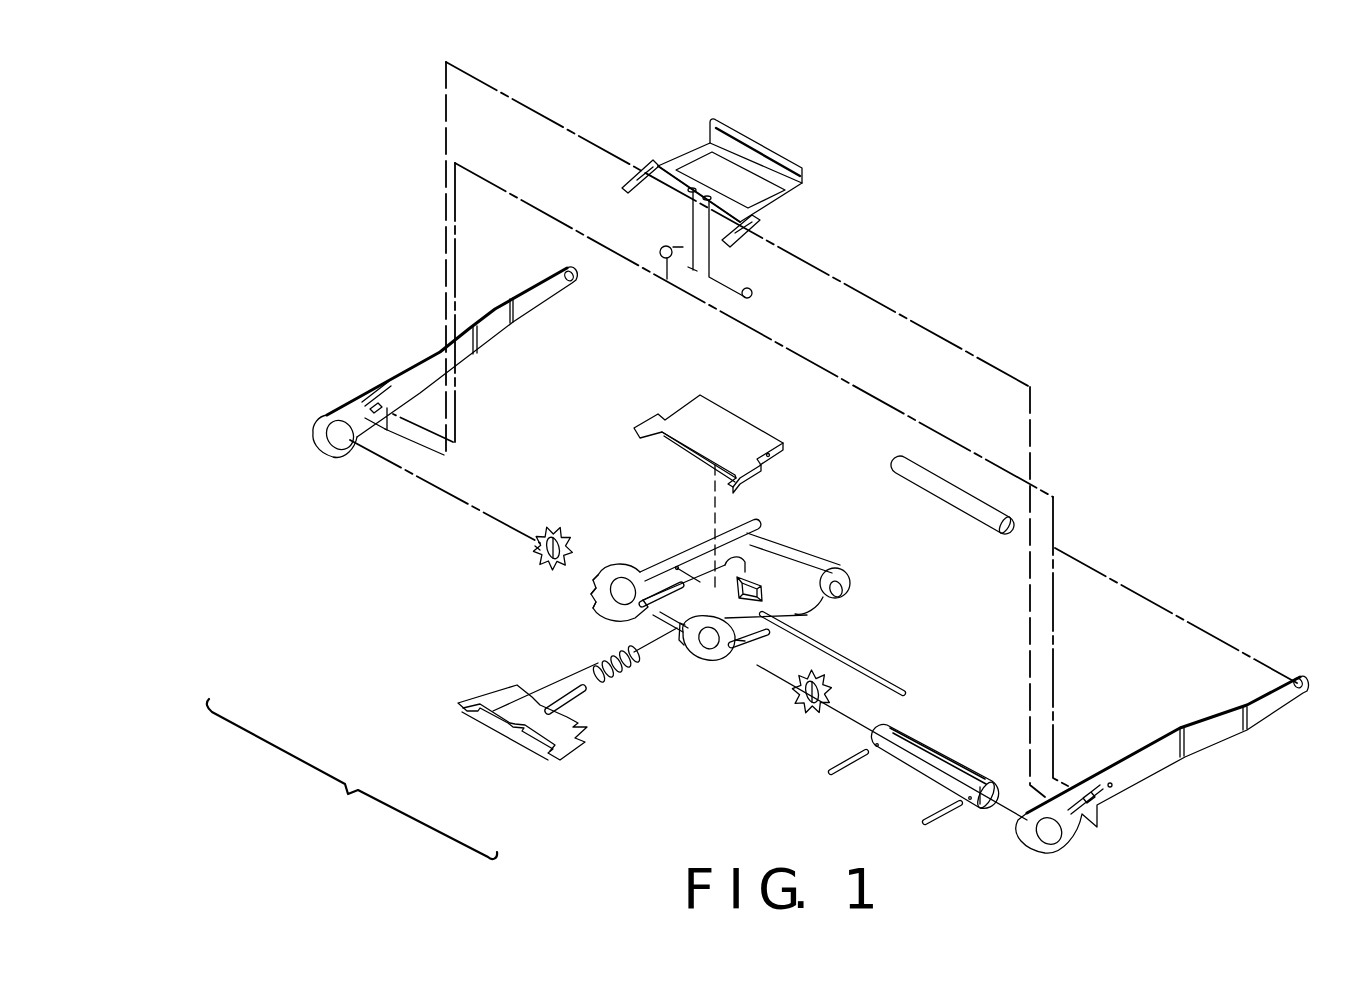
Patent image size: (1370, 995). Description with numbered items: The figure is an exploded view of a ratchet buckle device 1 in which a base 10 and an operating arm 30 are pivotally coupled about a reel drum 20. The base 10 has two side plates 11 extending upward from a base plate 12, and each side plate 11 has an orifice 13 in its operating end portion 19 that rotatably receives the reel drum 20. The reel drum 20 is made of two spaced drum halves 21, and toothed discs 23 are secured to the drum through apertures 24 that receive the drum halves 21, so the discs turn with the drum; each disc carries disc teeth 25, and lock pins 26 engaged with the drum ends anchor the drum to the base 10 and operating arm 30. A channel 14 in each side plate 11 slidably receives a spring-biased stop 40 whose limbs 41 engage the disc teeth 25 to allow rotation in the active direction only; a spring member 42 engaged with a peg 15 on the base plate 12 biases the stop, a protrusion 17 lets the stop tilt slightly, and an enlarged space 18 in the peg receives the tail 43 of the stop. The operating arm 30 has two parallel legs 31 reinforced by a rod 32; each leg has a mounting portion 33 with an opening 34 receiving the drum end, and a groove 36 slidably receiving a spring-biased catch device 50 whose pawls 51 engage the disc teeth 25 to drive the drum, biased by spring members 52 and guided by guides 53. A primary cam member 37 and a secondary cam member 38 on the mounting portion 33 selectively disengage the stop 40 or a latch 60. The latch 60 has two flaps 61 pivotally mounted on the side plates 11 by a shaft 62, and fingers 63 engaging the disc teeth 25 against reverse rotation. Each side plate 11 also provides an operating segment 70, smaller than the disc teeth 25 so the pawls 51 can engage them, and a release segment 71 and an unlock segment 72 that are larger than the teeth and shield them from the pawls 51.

The ratchet buckle device 1 is at (1076, 248).
The base 10 is at (848, 567).
The side plates 11 is at (815, 628).
The base plate 12 is at (697, 607).
The orifice 13 is at (703, 655).
The channel 14 is at (655, 585).
The peg 15 is at (752, 572).
The protrusion 17 is at (748, 662).
The enlarged space 18 is at (853, 587).
The operating end portion 19 is at (717, 677).
The reel drum 20 is at (973, 812).
The drum halves 21 is at (943, 758).
The toothed discs 23 is at (552, 540).
The apertures 24 is at (822, 693).
The disc teeth 25 is at (545, 551).
The lock pins 26 is at (830, 774).
The operating arm 30 is at (1252, 728).
The legs 31 is at (1215, 742).
The rod 32 is at (962, 497).
The mounting portion 33 is at (327, 413).
The opening 34 is at (1050, 832).
The groove 36 is at (1103, 791).
The primary cam member 37 is at (341, 434).
The secondary cam member 38 is at (314, 431).
The spring-biased stop 40 is at (488, 698).
The limbs 41 is at (547, 757).
The spring member 42 is at (599, 662).
The tail 43 is at (584, 696).
The spring-biased catch device 50 is at (693, 188).
The pawls 51 is at (702, 227).
The spring members 52 is at (670, 273).
The guides 53 is at (652, 161).
The latch 60 is at (738, 432).
The flaps 61 is at (785, 456).
The shaft 62 is at (898, 684).
The fingers 63 is at (720, 488).
The operating segment 70 is at (617, 578).
The release segment 71 is at (592, 580).
The unlock segment 72 is at (595, 601).